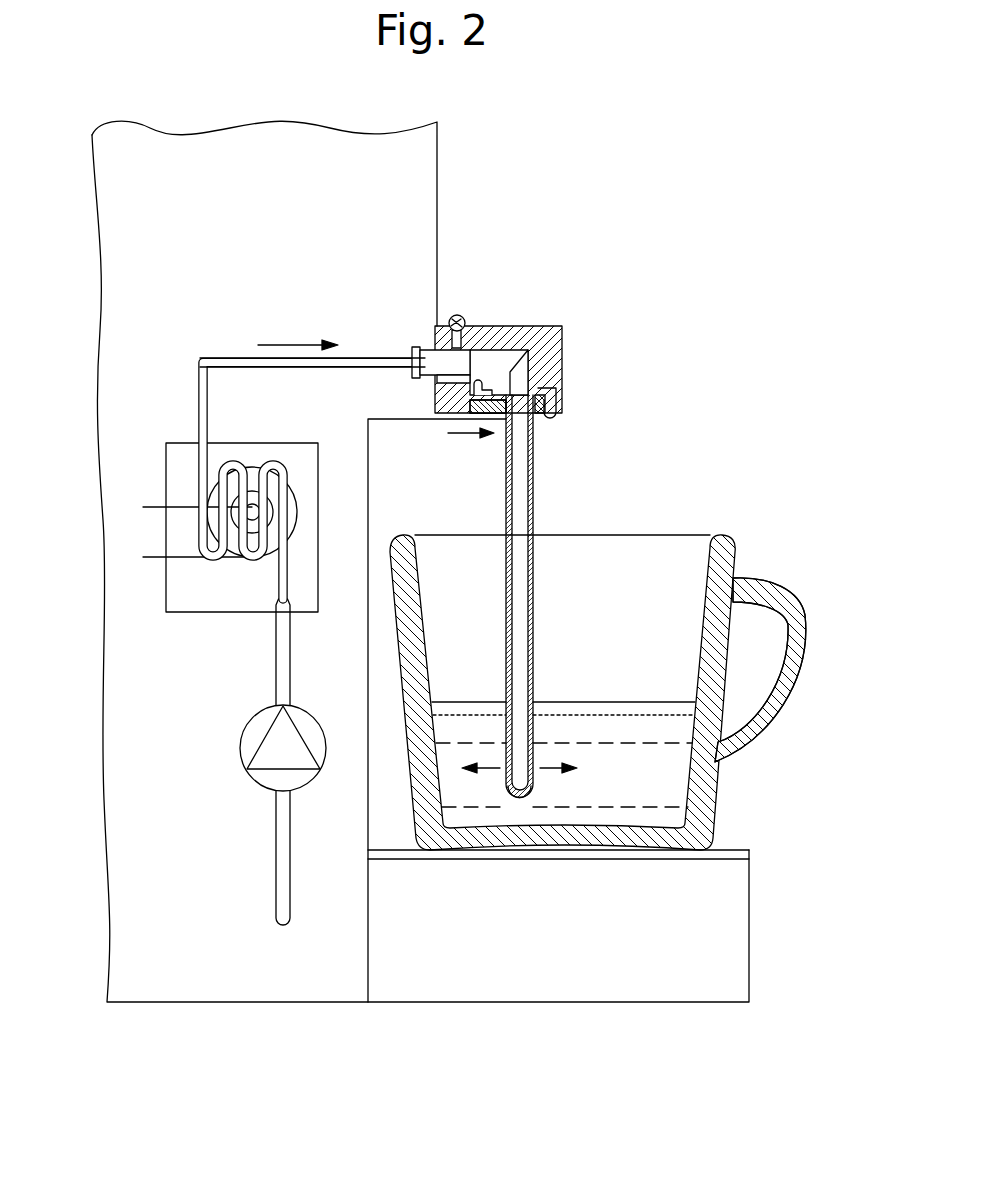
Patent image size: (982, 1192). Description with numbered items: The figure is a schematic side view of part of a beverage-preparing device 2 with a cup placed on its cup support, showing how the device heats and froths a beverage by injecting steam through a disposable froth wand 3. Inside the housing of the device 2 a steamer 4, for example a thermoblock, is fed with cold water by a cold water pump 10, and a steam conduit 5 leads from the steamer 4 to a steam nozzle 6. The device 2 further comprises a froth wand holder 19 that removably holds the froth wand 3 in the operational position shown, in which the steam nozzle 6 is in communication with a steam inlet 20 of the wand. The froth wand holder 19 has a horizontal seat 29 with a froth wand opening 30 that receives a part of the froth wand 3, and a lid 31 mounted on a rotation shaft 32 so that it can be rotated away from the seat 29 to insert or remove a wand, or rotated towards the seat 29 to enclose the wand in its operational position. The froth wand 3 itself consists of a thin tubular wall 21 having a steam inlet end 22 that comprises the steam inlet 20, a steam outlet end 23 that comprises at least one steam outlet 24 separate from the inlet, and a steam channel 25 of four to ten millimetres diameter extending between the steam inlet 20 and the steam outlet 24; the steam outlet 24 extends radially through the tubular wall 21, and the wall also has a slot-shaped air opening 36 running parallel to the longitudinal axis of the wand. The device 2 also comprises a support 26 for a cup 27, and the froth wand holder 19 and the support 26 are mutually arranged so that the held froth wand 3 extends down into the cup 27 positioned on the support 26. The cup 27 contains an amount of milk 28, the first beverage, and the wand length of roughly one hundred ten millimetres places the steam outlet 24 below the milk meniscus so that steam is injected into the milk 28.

The device 2 is at (412, 157).
The froth wand 3 is at (527, 663).
The steamer 4 is at (178, 586).
The steam conduit 5 is at (198, 390).
The steam nozzle 6 is at (418, 348).
The cold water pump 10 is at (243, 750).
The froth wand holder 19 is at (434, 334).
The steam inlet 20 is at (532, 450).
The tubular wall 21 is at (506, 513).
The steam inlet end 22 is at (535, 420).
The steam outlet end 23 is at (530, 790).
The steam outlet 24 is at (535, 776).
The steam channel 25 is at (516, 663).
The support 26 is at (720, 858).
The cup 27 is at (730, 558).
The milk 28 is at (657, 775).
The horizontal seat 29 is at (540, 404).
The froth wand opening 30 is at (492, 340).
The lid 31 is at (518, 330).
The rotation shaft 32 is at (457, 316).
The air opening 36 is at (506, 437).